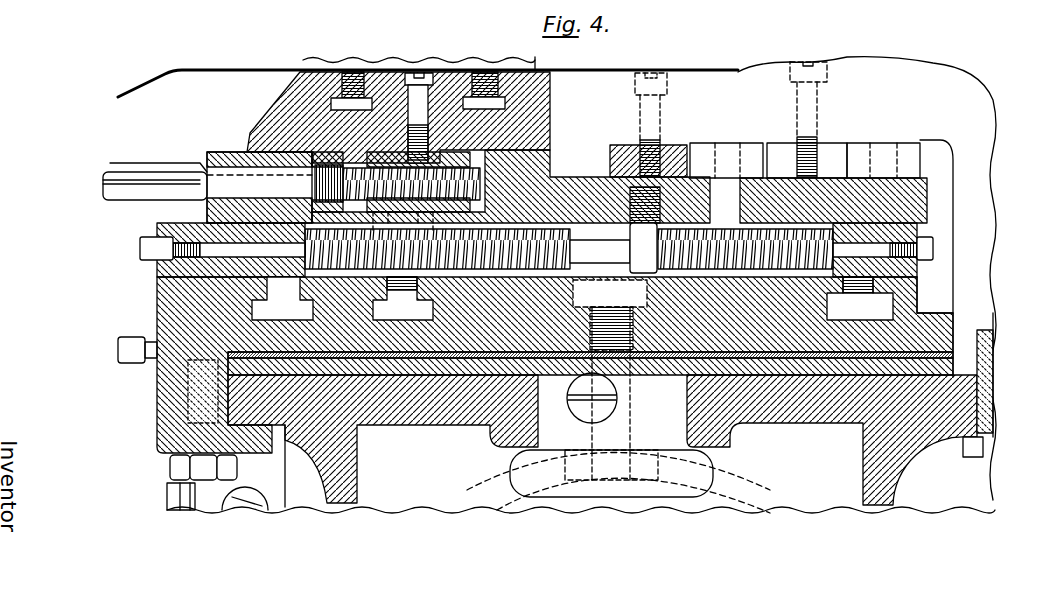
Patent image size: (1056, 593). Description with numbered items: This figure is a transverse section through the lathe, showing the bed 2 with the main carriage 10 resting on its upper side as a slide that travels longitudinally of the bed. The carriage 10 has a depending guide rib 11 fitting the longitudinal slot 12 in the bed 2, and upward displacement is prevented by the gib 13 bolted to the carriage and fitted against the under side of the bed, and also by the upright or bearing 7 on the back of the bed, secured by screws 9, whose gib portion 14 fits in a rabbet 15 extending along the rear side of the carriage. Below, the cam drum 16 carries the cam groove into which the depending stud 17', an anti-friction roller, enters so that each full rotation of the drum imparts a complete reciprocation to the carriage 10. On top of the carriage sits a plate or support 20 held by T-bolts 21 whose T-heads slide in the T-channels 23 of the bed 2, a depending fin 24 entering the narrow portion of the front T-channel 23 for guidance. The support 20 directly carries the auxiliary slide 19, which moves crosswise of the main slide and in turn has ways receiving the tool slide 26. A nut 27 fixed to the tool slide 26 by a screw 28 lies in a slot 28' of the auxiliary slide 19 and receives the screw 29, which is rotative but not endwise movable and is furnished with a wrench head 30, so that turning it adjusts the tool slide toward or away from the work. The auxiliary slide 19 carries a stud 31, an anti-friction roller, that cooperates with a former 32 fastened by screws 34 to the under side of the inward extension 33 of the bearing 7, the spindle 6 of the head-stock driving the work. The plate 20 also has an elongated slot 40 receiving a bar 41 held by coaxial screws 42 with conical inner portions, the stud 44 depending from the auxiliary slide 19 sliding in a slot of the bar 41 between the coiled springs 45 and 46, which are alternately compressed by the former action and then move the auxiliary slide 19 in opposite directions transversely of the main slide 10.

The bed 2 is at (783, 423).
The spindle 6 is at (428, 72).
The bearing 7 is at (980, 127).
The screws 9 is at (975, 468).
The carriage 10 is at (413, 322).
The guide rib 11 is at (672, 450).
The longitudinal slot 12 is at (503, 420).
The gib 13 is at (253, 447).
The gib portion 14 is at (985, 325).
The rabbet 15 is at (917, 280).
The cam drum 16 is at (742, 487).
The stud 17' is at (618, 502).
The auxiliary slides 19 is at (933, 197).
The supports 20 is at (917, 232).
The T-bolts 21 is at (927, 313).
The T-channels 23 is at (847, 317).
The fin 24 is at (270, 287).
The tool slide 26 is at (300, 100).
The nut 27 is at (470, 157).
The screw 28 is at (455, 95).
The slot 28' is at (618, 148).
The screw 29 is at (220, 180).
The head 30 is at (130, 163).
The stud 31 is at (878, 152).
The former 32 is at (678, 143).
The inward extension 33 is at (758, 72).
The screws 34 is at (827, 62).
The elongated slot 40 is at (588, 226).
The bar 41 is at (620, 253).
The coaxial screws 42 is at (935, 252).
The stud 44 is at (675, 425).
The coiled spring 45 is at (717, 235).
The coiled spring 46 is at (325, 222).